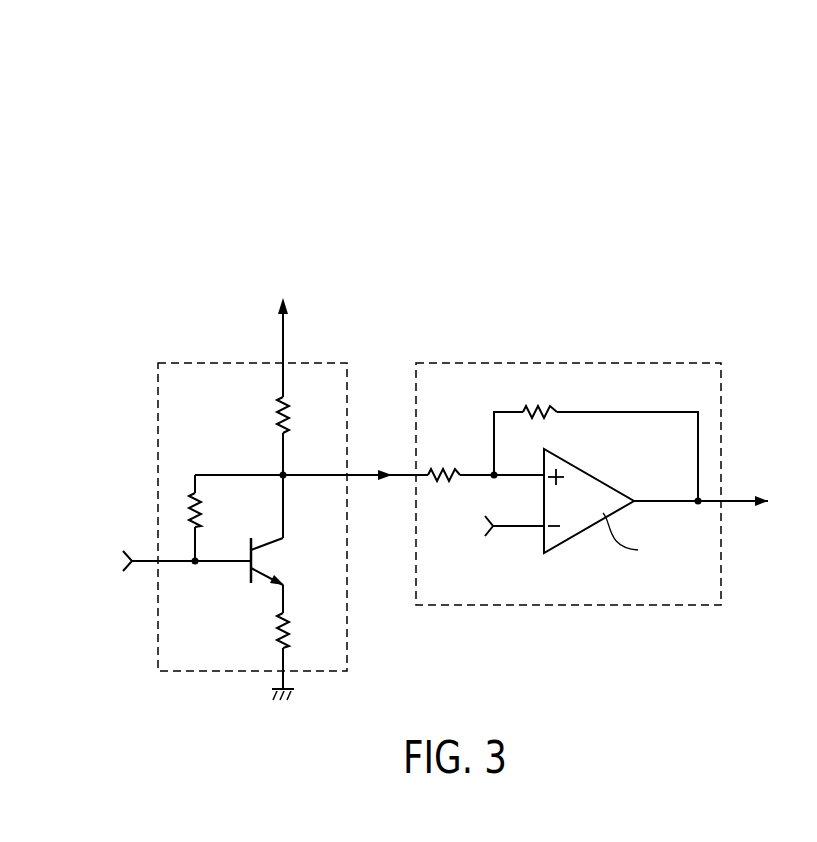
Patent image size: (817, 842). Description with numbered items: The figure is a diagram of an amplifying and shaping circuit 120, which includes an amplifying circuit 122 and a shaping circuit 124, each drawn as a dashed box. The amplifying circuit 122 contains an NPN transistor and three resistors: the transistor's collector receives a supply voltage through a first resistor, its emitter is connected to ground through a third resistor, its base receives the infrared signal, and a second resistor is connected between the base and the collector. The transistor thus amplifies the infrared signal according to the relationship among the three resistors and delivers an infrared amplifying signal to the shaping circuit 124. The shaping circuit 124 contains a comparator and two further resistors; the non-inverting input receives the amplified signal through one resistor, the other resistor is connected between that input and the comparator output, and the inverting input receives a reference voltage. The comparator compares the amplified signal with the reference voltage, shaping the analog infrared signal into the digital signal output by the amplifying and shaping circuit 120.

The amplifying and shaping circuit 120 is at (122, 233).
The amplifying circuit 122 is at (190, 363).
The shaping circuit 124 is at (480, 363).